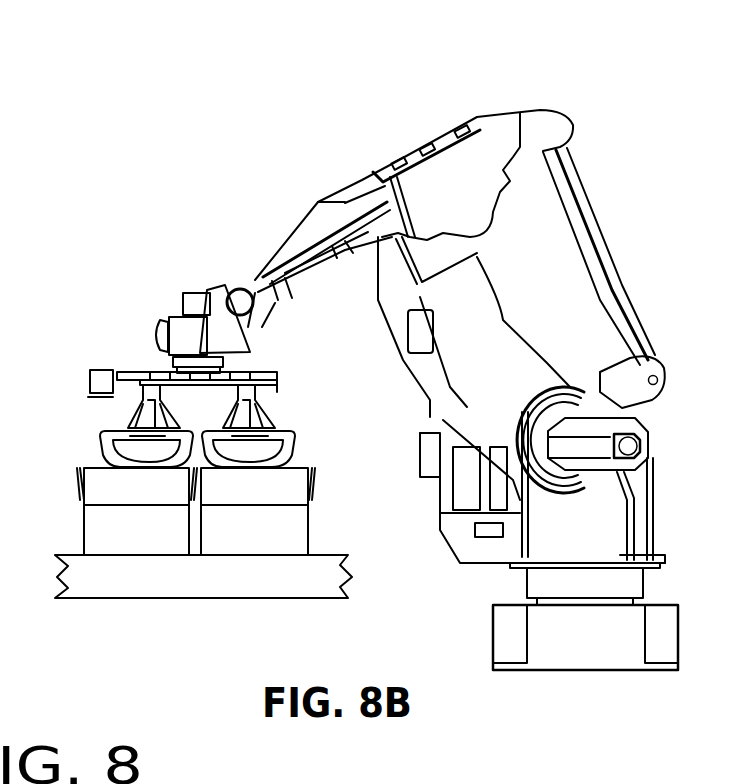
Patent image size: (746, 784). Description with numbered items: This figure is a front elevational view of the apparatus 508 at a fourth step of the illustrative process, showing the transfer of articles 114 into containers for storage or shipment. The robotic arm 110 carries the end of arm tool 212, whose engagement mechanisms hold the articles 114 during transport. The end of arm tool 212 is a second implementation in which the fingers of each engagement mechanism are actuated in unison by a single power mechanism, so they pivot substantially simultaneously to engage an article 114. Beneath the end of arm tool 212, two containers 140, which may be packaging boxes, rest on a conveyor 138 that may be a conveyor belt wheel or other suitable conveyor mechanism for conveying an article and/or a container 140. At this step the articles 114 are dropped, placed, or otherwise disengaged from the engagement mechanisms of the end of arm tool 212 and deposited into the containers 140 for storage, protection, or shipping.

The robotic arm system 508 is at (433, 94).
The robotic arm 110 is at (403, 147).
The end of arm tool 212 is at (292, 378).
The article 114 is at (95, 452).
The container 140 is at (82, 545).
The conveyor 138 is at (82, 600).